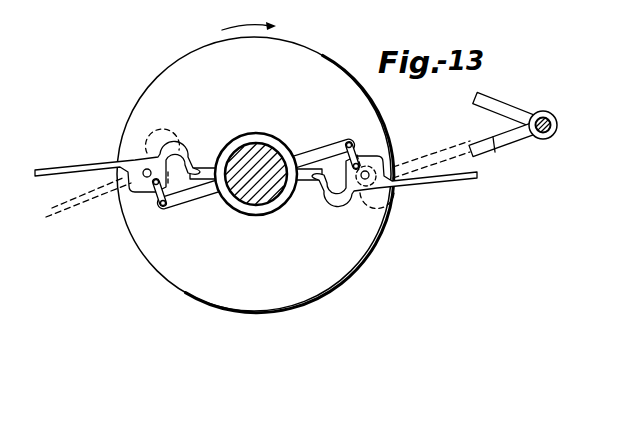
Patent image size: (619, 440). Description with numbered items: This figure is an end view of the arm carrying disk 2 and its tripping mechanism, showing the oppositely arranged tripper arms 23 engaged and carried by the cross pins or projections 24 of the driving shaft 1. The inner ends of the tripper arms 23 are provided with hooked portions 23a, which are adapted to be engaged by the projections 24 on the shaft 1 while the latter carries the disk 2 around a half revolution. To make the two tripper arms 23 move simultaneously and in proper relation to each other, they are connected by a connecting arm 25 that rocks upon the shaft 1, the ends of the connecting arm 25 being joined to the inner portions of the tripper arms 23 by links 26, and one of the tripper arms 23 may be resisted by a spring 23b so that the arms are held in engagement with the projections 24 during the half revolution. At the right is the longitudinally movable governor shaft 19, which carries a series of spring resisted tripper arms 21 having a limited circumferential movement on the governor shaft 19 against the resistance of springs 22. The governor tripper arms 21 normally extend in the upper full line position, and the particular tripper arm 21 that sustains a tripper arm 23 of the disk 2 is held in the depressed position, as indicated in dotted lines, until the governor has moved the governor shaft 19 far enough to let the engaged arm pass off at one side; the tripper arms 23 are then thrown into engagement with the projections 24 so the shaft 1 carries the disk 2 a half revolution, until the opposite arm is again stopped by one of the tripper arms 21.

The shaft 1 is at (241, 143).
The arm carrying disk 2 is at (331, 279).
The governor shaft 19 is at (549, 137).
The tripper arms 21 is at (500, 97).
The springs 22 is at (494, 138).
The tripper arms 23 is at (77, 167).
The hooked portions 23a is at (334, 238).
The spring 23b is at (396, 221).
The projections or pins 24 is at (197, 167).
The connecting arm 25 is at (306, 153).
The links 26 is at (403, 124).